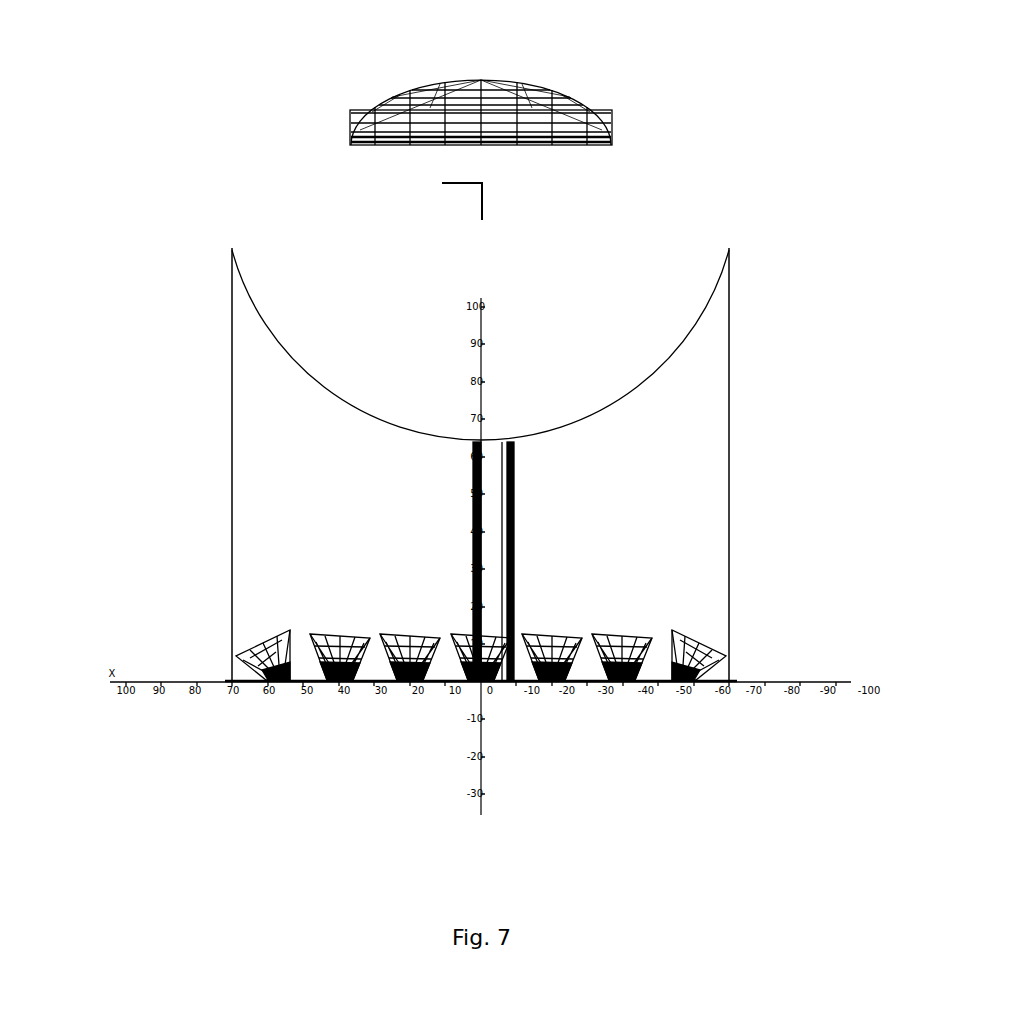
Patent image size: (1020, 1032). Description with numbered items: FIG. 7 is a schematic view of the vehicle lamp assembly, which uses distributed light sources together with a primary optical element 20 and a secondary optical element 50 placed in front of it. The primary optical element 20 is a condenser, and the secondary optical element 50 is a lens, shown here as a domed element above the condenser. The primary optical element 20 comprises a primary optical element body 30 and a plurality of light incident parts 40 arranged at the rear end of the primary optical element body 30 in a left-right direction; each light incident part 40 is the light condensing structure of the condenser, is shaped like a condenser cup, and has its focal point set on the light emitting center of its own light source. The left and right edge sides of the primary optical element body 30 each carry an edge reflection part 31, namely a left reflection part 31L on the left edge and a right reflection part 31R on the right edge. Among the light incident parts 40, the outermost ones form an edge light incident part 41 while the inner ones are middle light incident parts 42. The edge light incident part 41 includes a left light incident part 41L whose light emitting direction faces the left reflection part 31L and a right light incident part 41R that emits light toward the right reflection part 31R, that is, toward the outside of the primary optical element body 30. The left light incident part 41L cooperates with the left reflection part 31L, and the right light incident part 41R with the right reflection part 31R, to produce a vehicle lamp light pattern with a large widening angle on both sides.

The primary optical element 20 is at (467, 465).
The primary optical element body 30 is at (702, 460).
The edge reflection part 31 is at (467, 465).
The left reflection part 31L is at (232, 488).
The right reflection part 31R is at (729, 538).
The light incident part 40 is at (485, 752).
The edge light incident part 41 is at (486, 717).
The left light incident part 41L is at (258, 682).
The right light incident part 41R is at (700, 683).
The middle light incident part 42 is at (472, 682).
The secondary optical element 50 is at (513, 97).